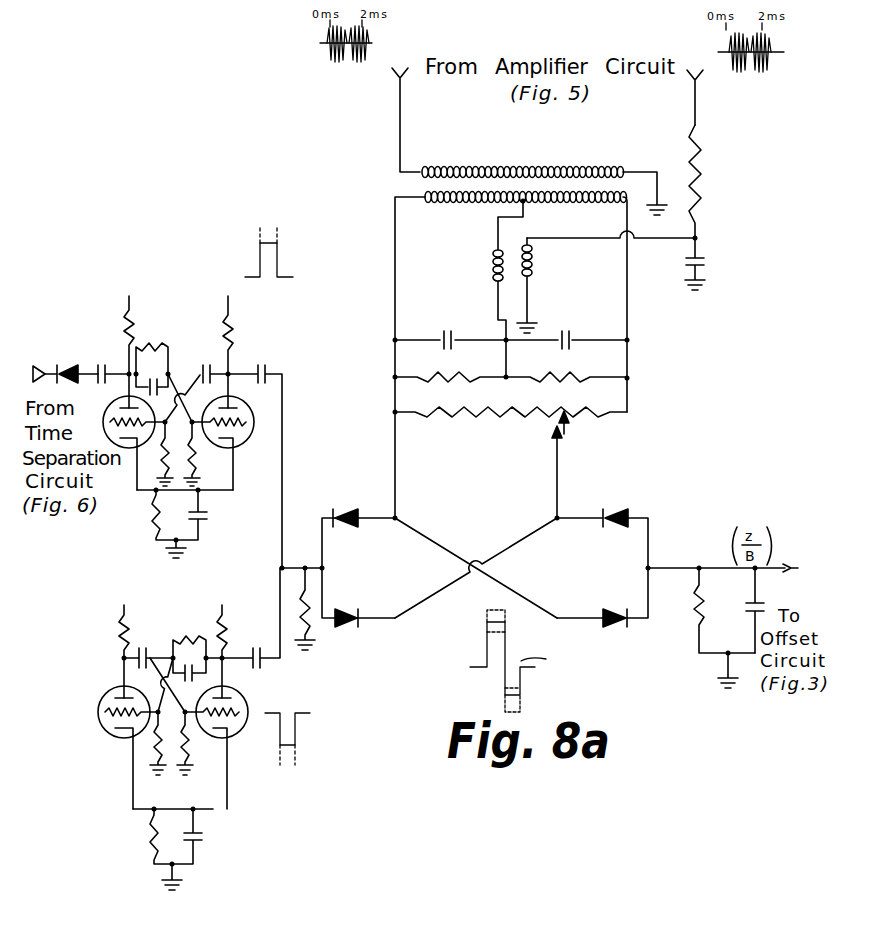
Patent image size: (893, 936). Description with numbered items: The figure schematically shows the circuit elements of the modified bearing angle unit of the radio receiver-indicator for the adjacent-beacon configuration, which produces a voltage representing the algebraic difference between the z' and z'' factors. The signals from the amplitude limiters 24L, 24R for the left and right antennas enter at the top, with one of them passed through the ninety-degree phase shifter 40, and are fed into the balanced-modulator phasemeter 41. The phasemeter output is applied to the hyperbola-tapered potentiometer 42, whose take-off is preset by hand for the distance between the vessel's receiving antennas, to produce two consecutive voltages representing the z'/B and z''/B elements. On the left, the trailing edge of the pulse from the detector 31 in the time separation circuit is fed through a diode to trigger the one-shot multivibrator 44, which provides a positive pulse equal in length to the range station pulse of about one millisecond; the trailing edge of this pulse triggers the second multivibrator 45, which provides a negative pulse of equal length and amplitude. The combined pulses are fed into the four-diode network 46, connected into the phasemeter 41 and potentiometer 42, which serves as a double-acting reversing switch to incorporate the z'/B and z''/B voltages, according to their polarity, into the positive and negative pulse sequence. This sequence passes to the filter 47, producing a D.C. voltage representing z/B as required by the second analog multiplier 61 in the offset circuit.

The amplitude limiter 24L is at (401, 110).
The amplitude limiter 24R is at (698, 86).
The detector 31 is at (57, 374).
The 90° phase shifter 40 is at (700, 175).
The balanced-modulator phasemeter 41 is at (462, 283).
The hyperbola-tapered potentiometer 42 is at (486, 410).
The one-shot multivibrator 44 is at (204, 348).
The second multivibrator 45 is at (181, 635).
The 4-diode network 46 is at (496, 540).
The filter 47 is at (720, 635).
The second analog multiplier 61 is at (789, 600).